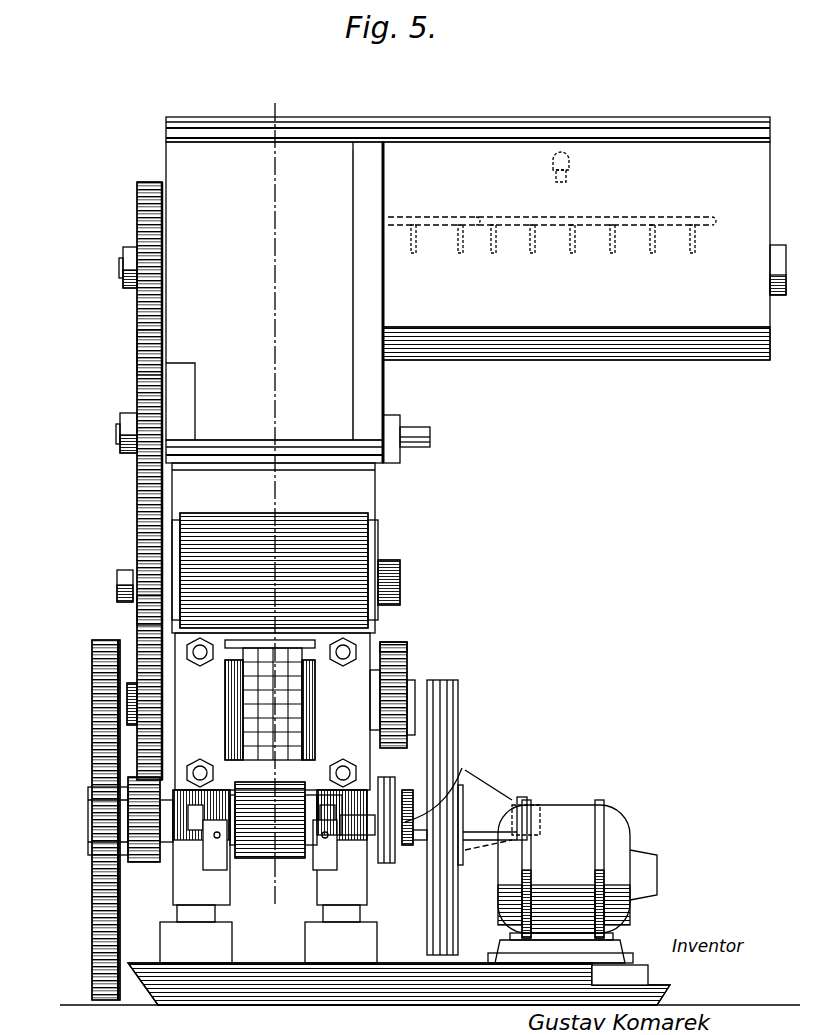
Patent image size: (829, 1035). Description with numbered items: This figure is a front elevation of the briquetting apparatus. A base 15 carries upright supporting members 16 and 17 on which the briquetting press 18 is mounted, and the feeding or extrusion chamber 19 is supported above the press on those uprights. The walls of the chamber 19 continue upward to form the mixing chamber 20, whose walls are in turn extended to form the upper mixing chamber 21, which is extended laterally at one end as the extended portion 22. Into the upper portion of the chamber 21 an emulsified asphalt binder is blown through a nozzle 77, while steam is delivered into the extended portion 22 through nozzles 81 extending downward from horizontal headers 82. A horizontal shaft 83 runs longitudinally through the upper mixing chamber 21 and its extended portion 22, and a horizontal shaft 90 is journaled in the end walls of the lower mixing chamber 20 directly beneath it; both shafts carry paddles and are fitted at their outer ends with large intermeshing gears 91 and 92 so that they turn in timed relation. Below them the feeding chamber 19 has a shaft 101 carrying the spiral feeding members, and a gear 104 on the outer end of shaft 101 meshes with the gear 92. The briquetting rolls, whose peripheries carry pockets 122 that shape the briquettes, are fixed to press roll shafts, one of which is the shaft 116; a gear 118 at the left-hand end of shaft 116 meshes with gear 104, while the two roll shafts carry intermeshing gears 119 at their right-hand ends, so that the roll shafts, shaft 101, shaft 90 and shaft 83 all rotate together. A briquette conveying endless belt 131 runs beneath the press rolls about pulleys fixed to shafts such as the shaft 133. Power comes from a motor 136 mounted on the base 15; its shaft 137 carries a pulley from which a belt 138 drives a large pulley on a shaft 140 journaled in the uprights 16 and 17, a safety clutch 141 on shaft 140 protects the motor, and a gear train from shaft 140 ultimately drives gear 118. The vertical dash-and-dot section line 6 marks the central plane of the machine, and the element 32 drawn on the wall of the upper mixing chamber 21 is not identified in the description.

The shaft axis line 6 is at (271, 489).
The base 15 is at (246, 985).
The upright supporting member 16 is at (268, 713).
The upright supporting member 17 is at (360, 672).
The briquetting press 18 is at (283, 648).
The feeding or extrusion chamber 19 is at (330, 556).
The mixing chamber 20 is at (325, 390).
The upper mixing chamber 21 is at (190, 170).
The extended portion 22 is at (640, 335).
The partition wall 32 is at (330, 295).
The nozzle 77 is at (572, 178).
The nozzles 81 is at (492, 250).
The horizontal headers 82 is at (447, 217).
The horizontal shaft 83 is at (124, 272).
The horizontal shaft 90 is at (122, 430).
The gear 91 is at (142, 338).
The gear 92 is at (142, 496).
The shaft 101 is at (118, 578).
The gear 104 is at (140, 608).
The briquetting press roll shaft 116 is at (128, 700).
The gear 118 is at (140, 656).
The intermeshing gears 119 is at (400, 645).
The pockets 122 is at (292, 730).
The briquette conveying endless belt 131 is at (292, 850).
The shaft 133 is at (355, 848).
The motor 136 is at (570, 816).
The shaft 137 is at (325, 785).
The belt 138 is at (450, 740).
The shaft 140 is at (464, 770).
The safety clutch 141 is at (512, 796).